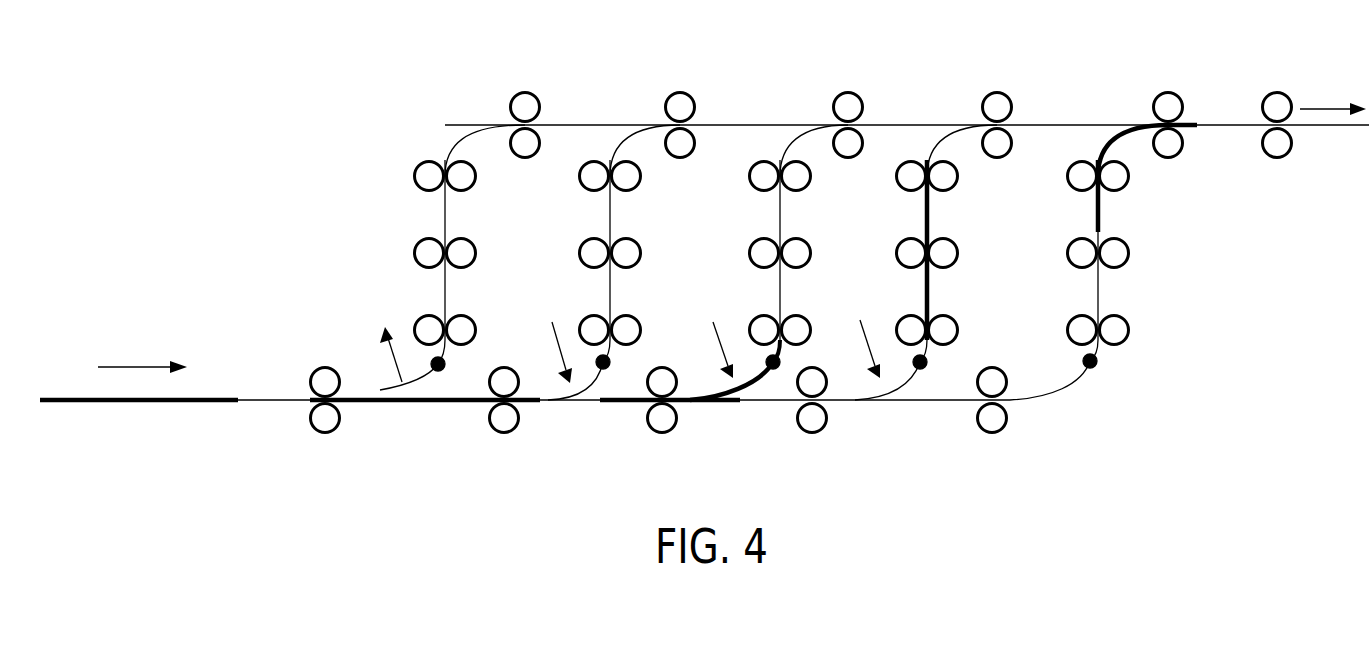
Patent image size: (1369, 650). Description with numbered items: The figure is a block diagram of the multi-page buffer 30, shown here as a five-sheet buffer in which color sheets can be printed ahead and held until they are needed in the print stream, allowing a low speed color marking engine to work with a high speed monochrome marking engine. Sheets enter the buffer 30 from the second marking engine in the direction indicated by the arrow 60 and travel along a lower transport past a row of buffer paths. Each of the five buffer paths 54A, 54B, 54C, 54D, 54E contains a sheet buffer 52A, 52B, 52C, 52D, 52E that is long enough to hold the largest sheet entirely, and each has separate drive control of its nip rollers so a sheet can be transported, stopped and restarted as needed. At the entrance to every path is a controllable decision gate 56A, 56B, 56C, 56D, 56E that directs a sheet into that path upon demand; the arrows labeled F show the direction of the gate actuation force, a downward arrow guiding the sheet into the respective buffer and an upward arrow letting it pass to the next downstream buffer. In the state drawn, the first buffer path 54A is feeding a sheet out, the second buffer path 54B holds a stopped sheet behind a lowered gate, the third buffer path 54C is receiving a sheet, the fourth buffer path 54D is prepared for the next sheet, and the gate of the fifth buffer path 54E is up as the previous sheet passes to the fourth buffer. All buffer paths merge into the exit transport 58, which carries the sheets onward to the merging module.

The multi-page buffer 30 is at (266, 152).
The sheet buffer 52A is at (1101, 292).
The sheet buffer 52B is at (930, 292).
The sheet buffer 52C is at (783, 292).
The sheet buffer 52D is at (613, 292).
The sheet buffer 52E is at (448, 292).
The first buffer path 54A is at (1101, 213).
The second buffer path 54B is at (930, 213).
The third buffer path 54C is at (783, 213).
The fourth buffer path 54D is at (613, 213).
The fifth buffer path 54E is at (448, 213).
The decision gate 56A is at (1058, 385).
The decision gate 56B is at (888, 387).
The decision gate 56C is at (746, 385).
The decision gate 56D is at (586, 385).
The decision gate 56E is at (418, 378).
The exit transport 58 is at (1340, 108).
The arrow 60 is at (130, 365).